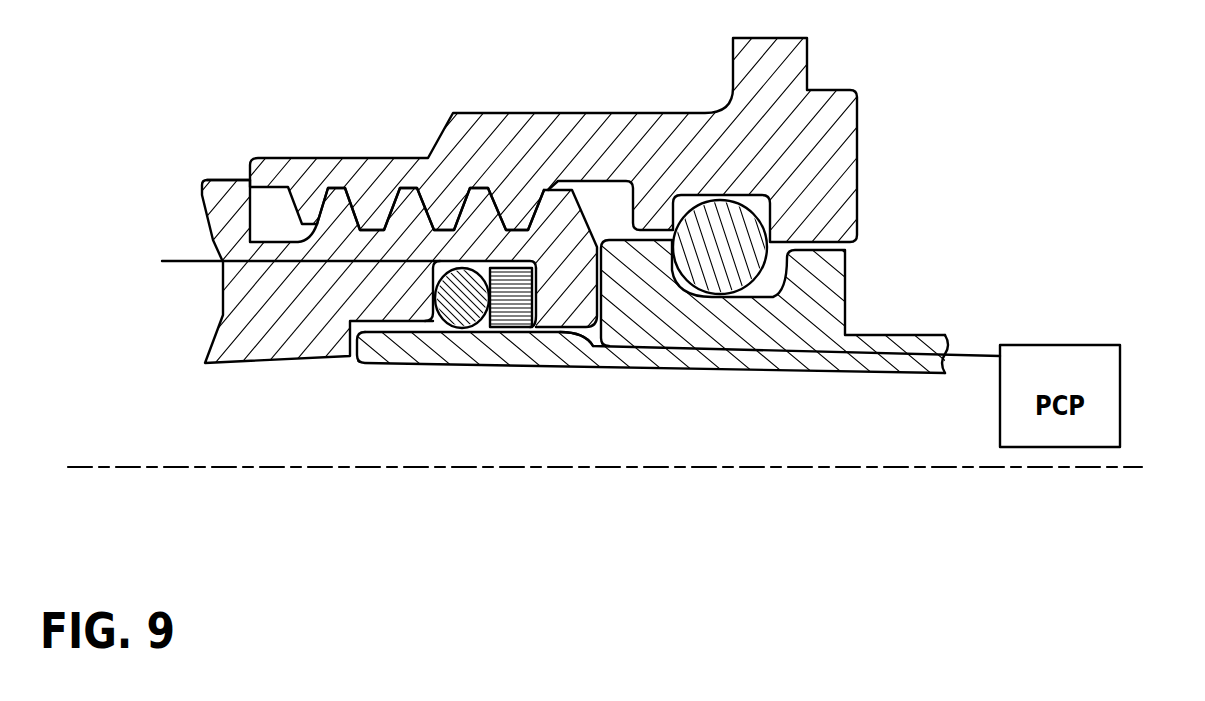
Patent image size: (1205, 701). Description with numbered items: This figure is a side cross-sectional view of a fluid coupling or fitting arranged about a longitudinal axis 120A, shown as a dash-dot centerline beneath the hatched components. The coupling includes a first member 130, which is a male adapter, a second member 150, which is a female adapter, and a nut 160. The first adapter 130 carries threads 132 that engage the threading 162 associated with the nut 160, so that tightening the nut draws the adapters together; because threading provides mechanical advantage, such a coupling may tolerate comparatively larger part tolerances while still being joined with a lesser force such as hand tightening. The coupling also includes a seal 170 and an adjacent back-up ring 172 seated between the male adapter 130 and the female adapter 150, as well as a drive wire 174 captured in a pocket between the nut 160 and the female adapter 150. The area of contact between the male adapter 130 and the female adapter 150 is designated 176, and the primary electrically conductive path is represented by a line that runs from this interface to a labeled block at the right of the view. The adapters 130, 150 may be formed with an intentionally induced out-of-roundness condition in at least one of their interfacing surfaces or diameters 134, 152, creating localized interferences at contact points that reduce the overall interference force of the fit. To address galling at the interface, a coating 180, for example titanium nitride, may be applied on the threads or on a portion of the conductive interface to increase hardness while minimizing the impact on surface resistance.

The first member 130 is at (223, 213).
The threads 132 is at (337, 217).
The interfacing surface/diameter 134 is at (380, 367).
The second member 150 is at (808, 303).
The interfacing surface/diameter 152 is at (410, 333).
The nut 160 is at (812, 122).
The threading 162 is at (440, 205).
The seal 170 is at (468, 312).
The back-up ring 172 is at (513, 305).
The drive wire 174 is at (737, 233).
The area of contact 176 is at (552, 335).
The coating 180 is at (240, 178).
The longitudinal axis 120A is at (1078, 468).